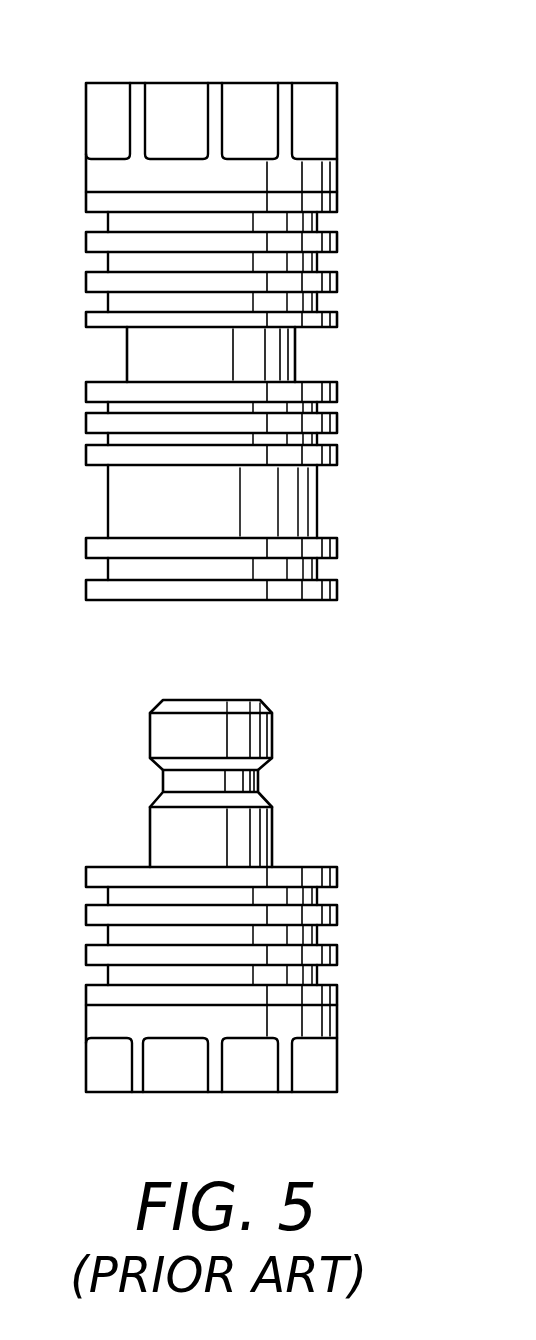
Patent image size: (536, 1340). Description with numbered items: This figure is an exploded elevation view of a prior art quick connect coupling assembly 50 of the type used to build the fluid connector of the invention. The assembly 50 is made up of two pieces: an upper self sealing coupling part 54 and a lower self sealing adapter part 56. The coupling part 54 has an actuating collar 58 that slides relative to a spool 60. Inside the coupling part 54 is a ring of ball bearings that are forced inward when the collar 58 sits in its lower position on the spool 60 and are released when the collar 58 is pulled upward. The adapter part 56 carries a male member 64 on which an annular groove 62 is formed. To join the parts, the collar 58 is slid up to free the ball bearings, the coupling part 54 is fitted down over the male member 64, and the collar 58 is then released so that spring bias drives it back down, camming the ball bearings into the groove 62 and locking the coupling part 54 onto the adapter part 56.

The quick connect coupling assembly 50 is at (398, 80).
The self sealing coupling part 54 is at (337, 172).
The self sealing adapter part 56 is at (337, 1058).
The actuating collar 58 is at (337, 425).
The spool 60 is at (295, 353).
The groove 62 is at (263, 787).
The male member 64 is at (157, 735).